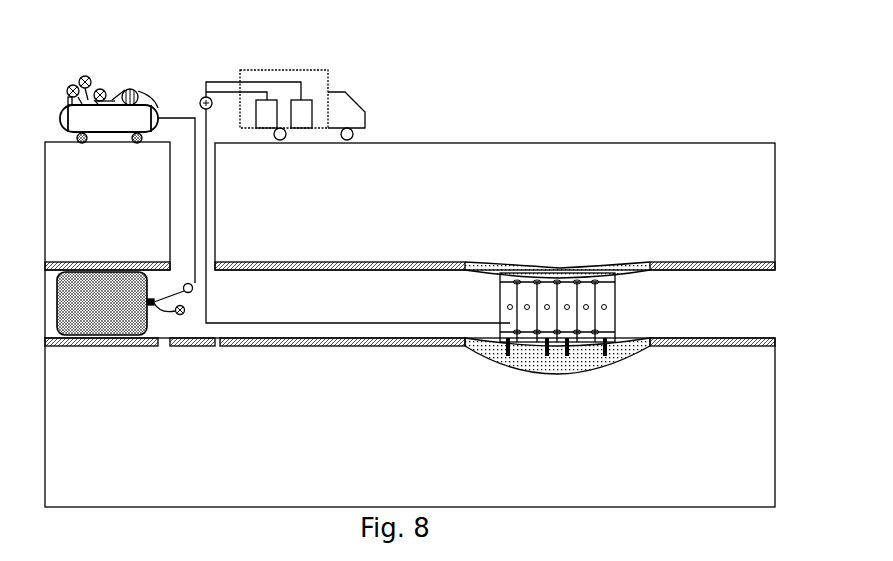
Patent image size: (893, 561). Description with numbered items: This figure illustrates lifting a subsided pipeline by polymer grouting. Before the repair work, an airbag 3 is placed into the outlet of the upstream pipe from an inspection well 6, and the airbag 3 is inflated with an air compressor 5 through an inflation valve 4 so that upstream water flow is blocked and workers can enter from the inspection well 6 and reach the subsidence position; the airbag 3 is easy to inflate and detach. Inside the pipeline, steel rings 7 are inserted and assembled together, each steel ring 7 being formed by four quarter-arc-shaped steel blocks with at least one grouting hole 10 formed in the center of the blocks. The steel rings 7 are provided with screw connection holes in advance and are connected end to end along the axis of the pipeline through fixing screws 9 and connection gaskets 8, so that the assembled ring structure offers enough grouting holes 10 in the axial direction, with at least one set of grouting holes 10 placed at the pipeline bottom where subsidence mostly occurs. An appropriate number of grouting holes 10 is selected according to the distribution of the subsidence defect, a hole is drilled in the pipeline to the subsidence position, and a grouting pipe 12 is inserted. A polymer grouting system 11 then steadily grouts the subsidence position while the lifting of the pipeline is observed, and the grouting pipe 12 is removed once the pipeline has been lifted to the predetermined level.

The airbag 3 is at (103, 313).
The inflation valve 4 is at (193, 292).
The air compressor 5 is at (110, 113).
The inspection well 6 is at (200, 162).
The steel ring 7 is at (607, 308).
The connection gasket 8 is at (592, 283).
The fixing screw 9 is at (515, 283).
The grouting hole 10 is at (510, 307).
The polymer grouting system 11 is at (287, 66).
The grouting pipe 12 is at (605, 352).